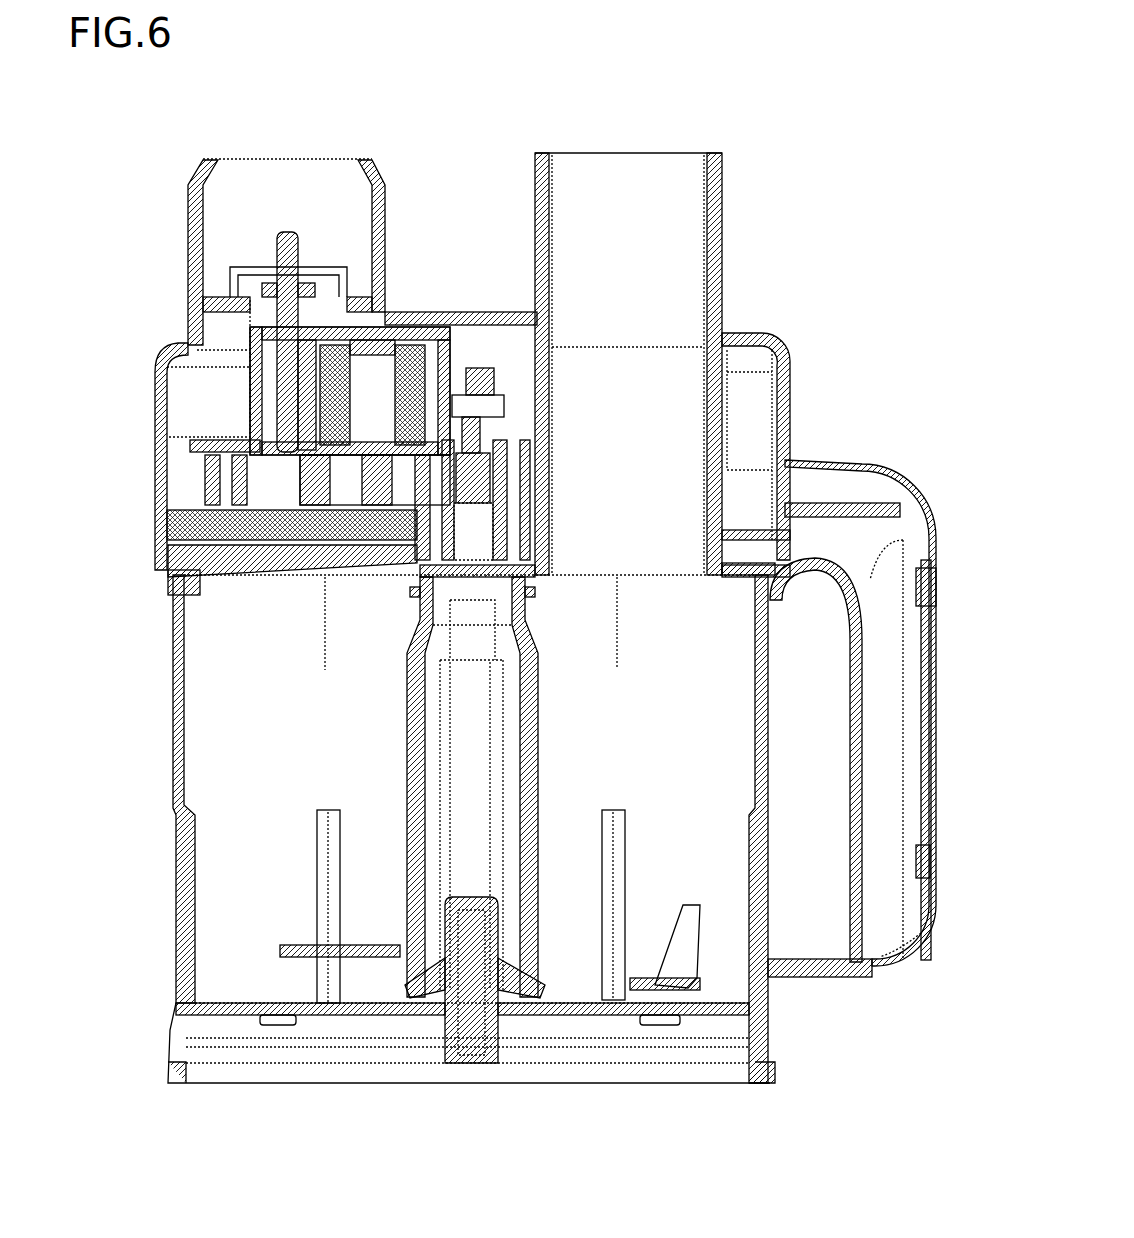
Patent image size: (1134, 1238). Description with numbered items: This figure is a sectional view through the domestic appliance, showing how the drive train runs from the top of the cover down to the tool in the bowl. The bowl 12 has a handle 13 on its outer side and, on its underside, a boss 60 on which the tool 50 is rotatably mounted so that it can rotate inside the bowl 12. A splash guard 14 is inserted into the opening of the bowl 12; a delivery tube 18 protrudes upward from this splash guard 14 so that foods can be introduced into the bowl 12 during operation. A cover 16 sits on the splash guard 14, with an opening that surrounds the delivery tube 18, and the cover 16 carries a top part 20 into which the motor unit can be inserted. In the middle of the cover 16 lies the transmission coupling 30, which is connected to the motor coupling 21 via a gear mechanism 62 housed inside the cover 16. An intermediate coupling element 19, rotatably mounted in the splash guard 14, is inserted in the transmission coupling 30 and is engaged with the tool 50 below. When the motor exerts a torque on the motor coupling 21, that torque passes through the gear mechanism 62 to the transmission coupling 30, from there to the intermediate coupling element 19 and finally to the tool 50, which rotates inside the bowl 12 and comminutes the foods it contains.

The bowl 12 is at (760, 870).
The handle 13 is at (942, 637).
The splash guard 14 is at (257, 547).
The cover 16 is at (782, 415).
The delivery tube 18 is at (717, 173).
The intermediate coupling element 19 is at (483, 473).
The top part 20 is at (380, 217).
The motor coupling 21 is at (293, 230).
The transmission coupling 30 is at (503, 412).
The tool 50 is at (552, 773).
The boss 60 is at (470, 1026).
The gear mechanism 62 is at (245, 375).